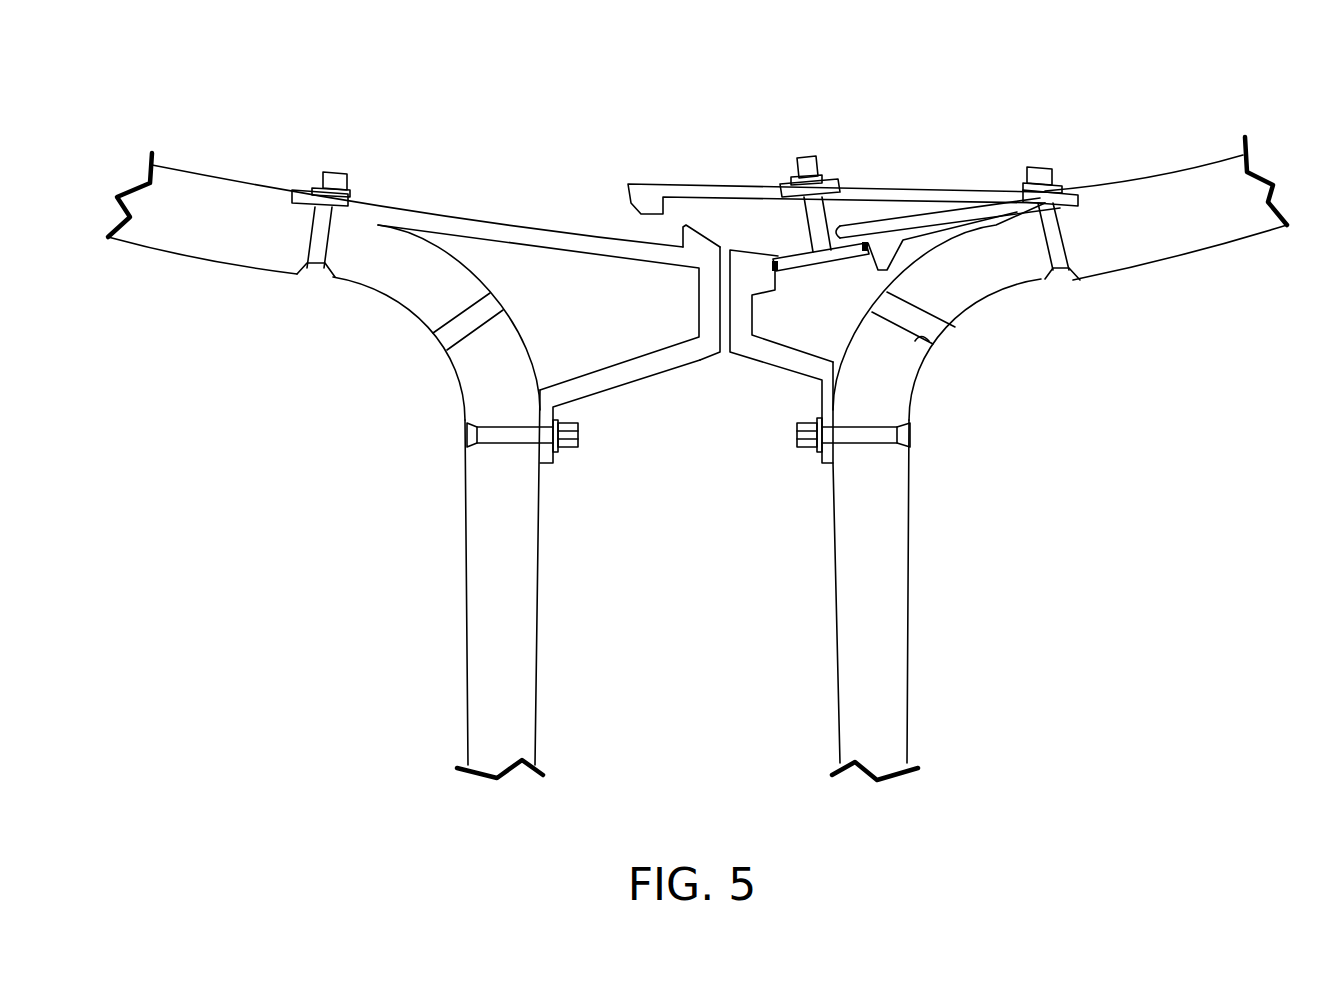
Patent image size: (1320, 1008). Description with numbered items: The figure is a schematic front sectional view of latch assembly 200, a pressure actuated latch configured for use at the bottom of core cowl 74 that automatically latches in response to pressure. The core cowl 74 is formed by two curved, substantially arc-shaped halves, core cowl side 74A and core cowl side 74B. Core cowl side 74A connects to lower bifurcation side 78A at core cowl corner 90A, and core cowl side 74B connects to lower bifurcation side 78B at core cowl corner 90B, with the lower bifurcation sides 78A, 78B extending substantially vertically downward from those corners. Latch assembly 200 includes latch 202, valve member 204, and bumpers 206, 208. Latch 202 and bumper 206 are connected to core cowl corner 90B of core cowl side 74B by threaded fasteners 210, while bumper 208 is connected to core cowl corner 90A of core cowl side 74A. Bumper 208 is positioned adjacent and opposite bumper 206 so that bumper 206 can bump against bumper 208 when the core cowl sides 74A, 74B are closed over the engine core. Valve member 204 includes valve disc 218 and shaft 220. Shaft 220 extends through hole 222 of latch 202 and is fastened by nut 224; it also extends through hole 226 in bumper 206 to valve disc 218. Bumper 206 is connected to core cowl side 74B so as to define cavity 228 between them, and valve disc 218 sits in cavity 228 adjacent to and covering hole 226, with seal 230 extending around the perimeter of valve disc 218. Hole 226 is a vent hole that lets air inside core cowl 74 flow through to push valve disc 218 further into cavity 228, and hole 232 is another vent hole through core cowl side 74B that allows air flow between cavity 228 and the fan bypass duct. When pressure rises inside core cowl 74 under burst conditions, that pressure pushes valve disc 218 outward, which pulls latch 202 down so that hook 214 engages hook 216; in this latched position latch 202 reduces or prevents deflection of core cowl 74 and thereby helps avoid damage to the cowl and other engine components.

The core cowl 74 is at (239, 318).
The core cowl side 74A is at (213, 270).
The core cowl side 74B is at (1208, 262).
The lower bifurcation side 78A is at (465, 540).
The lower bifurcation side 78B is at (910, 598).
The core cowl corner 90A is at (407, 313).
The core cowl corner 90B is at (947, 328).
The latch assembly 200 is at (678, 140).
The latch 202 is at (873, 180).
The valve member 204 is at (795, 214).
The bumper 206 is at (744, 357).
The bumper 208 is at (652, 377).
The threaded fasteners 210 is at (1062, 280).
The hook 214 is at (643, 228).
The hook 216 is at (683, 245).
The valve disc 218 is at (823, 257).
The shaft 220 is at (890, 200).
The hole 222 is at (795, 168).
The nut 224 is at (821, 174).
The hole 226 is at (925, 208).
The cavity 228 is at (813, 353).
The seal 230 is at (777, 270).
The hole 232 is at (923, 338).